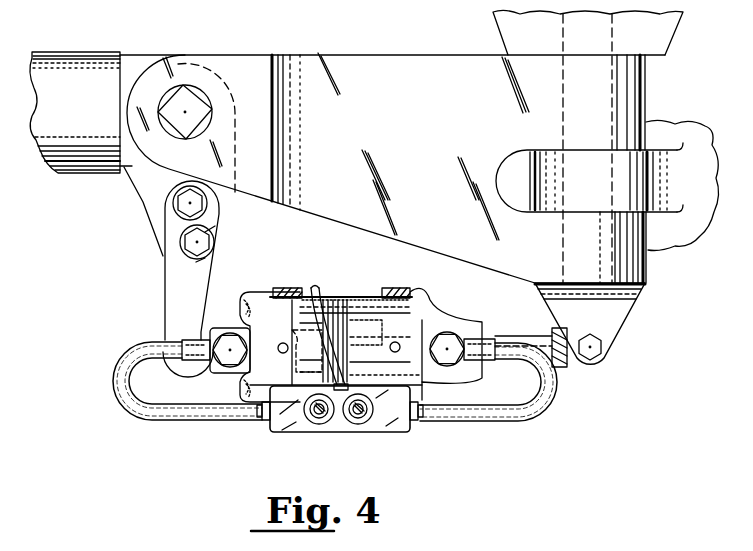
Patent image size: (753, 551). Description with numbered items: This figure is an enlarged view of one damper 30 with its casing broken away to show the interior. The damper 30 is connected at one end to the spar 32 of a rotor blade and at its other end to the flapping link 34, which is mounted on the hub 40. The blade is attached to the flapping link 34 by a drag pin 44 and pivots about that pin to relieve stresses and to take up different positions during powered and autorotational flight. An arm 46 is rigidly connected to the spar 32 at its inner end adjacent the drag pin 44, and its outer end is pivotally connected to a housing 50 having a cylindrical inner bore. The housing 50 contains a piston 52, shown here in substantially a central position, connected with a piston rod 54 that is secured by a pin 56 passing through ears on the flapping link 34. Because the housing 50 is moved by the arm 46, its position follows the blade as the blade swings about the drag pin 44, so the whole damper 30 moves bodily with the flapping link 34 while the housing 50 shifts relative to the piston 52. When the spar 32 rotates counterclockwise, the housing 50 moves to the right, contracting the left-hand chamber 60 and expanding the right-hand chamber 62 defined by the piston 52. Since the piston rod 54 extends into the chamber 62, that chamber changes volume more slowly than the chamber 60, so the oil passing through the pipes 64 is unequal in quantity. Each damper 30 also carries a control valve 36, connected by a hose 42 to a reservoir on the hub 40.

The damper 30 is at (172, 444).
The spar 32 is at (97, 67).
The flapping link 34 is at (343, 70).
The control valve 36 is at (281, 428).
The hub 40 is at (505, 32).
The hose 42 is at (319, 289).
The drag pin 44 is at (190, 103).
The arm 46 is at (190, 286).
The housing 50 is at (302, 292).
The piston 52 is at (353, 296).
The piston rod 54 is at (534, 334).
The pin 56 is at (597, 348).
The left-hand chamber 60 is at (320, 371).
The right-hand chamber 62 is at (393, 335).
The pipe 64 is at (123, 377).